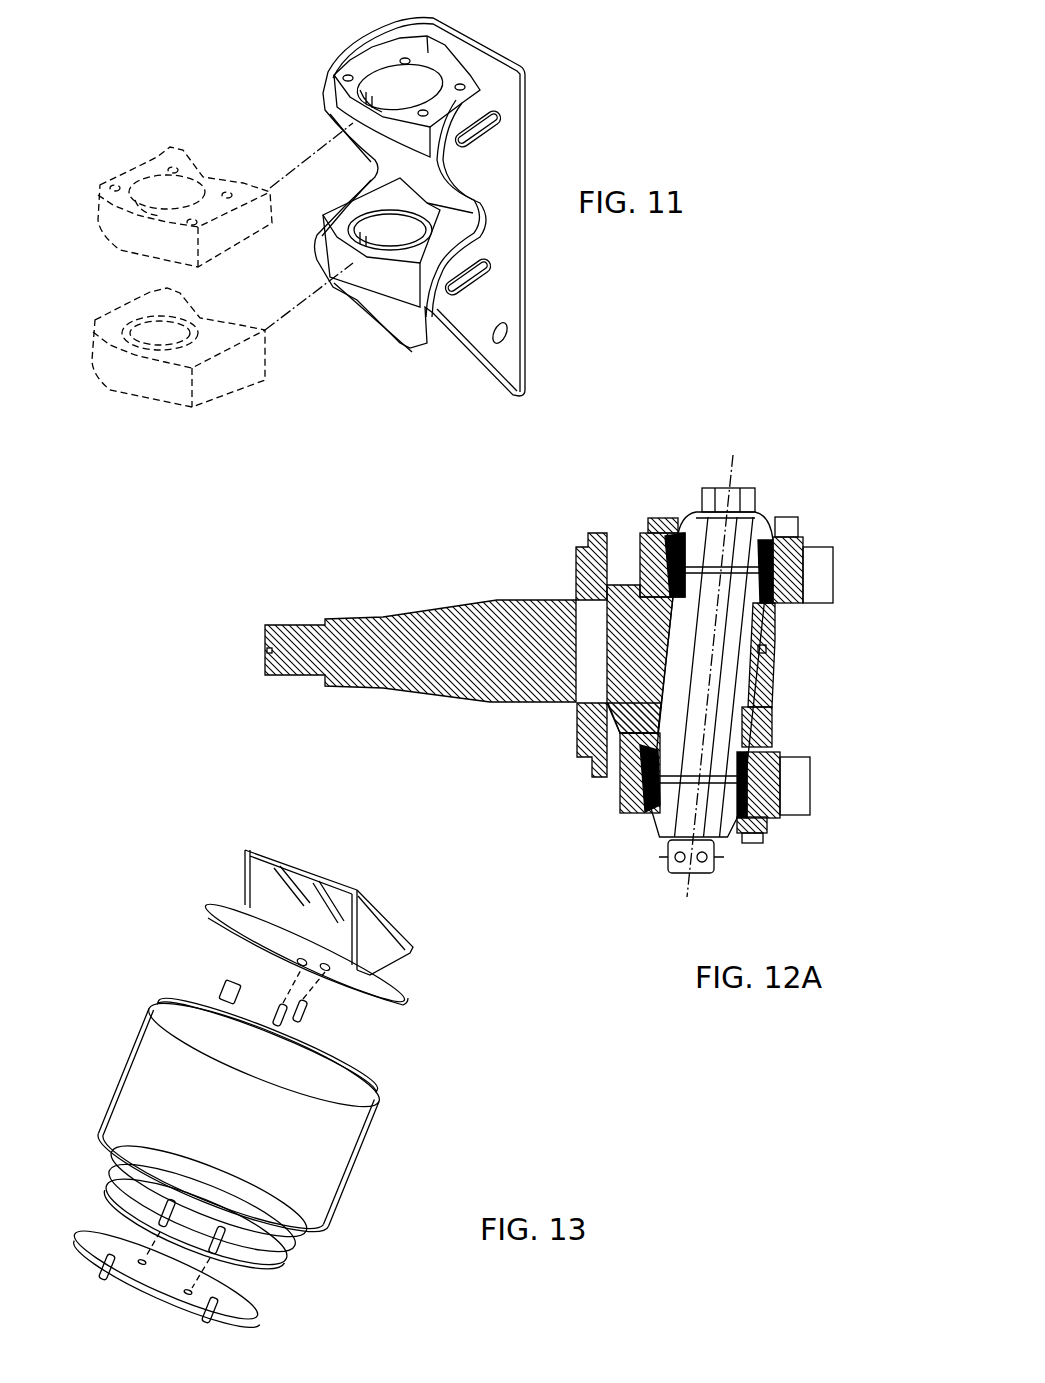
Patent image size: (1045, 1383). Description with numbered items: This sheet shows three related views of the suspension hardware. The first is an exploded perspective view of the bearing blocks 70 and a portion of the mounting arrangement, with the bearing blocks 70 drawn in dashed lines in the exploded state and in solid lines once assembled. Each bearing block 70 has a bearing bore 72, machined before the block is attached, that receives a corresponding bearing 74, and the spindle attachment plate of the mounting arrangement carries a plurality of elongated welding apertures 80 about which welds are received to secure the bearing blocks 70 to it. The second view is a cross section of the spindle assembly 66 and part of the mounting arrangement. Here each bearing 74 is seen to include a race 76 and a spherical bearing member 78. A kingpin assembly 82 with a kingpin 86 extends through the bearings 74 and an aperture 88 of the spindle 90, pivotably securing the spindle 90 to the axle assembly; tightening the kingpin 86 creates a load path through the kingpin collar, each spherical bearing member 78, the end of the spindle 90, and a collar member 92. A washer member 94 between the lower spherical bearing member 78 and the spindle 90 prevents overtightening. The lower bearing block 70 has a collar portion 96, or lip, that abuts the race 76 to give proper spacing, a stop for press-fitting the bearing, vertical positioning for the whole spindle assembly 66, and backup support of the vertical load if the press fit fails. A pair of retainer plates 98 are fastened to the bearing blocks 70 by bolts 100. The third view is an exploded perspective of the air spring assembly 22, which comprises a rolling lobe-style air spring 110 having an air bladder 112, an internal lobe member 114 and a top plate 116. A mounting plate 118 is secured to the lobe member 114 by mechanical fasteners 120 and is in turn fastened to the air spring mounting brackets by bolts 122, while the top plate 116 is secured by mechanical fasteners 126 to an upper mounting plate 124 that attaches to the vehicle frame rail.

In FIG. 13, the air spring assembly 22 is at (110, 921).
In FIG. 12A, the spindle assembly 66 is at (767, 446).
In FIG. 11, the bearing block 70 is at (373, 60).
In FIG. 12A, the bearing block 70 is at (806, 568).
In FIG. 11, the bearing bore 72 is at (135, 170).
In FIG. 12A, the bearing 74 is at (644, 542).
In FIG. 12A, the race 76 is at (642, 583).
In FIG. 12A, the spherical bearing member 78 is at (600, 572).
In FIG. 11, the elongated welding aperture 80 is at (496, 121).
In FIG. 12A, the kingpin assembly 82 is at (760, 637).
In FIG. 12A, the kingpin 86 is at (718, 486).
In FIG. 12A, the aperture 88 is at (770, 667).
In FIG. 12A, the spindle 90 is at (405, 613).
In FIG. 12A, the collar member 92 is at (733, 842).
In FIG. 12A, the washer member 94 is at (772, 732).
In FIG. 12A, the collar portion 96 is at (630, 720).
In FIG. 12A, the retainer plate 98 is at (668, 517).
In FIG. 12A, the bolt 100 is at (800, 516).
In FIG. 13, the rolling lobe-style air spring 110 is at (383, 1181).
In FIG. 13, the air bladder 112 is at (375, 1146).
In FIG. 13, the internal lobe member 114 is at (293, 1262).
In FIG. 13, the top plate 116 is at (372, 1068).
In FIG. 13, the mounting plate 118 is at (186, 1294).
In FIG. 13, the mechanical fastener 120 is at (258, 1275).
In FIG. 13, the bolt 122 is at (216, 1322).
In FIG. 13, the upper mounting plate 124 is at (405, 940).
In FIG. 13, the mechanical fastener 126 is at (310, 1020).